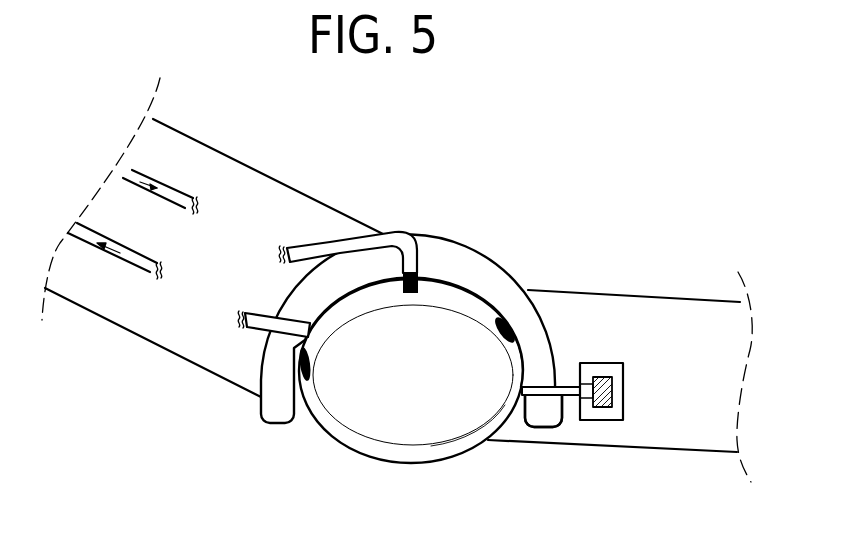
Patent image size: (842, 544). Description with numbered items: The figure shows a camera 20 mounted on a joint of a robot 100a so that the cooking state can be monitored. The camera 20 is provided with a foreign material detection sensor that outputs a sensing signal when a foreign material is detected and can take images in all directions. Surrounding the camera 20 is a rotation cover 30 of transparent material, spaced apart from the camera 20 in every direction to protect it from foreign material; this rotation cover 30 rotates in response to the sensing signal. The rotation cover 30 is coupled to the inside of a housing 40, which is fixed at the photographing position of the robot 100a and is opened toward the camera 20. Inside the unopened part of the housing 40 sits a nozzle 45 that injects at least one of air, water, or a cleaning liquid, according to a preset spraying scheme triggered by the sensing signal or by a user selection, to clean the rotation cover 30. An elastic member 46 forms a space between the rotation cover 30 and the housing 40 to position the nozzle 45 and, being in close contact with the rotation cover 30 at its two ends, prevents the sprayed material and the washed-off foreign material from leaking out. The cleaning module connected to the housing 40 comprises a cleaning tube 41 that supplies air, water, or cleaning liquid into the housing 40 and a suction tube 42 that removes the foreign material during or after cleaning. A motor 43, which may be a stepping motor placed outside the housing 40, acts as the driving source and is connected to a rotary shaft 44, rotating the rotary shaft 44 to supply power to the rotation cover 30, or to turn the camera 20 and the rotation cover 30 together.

The robot 100a is at (277, 181).
The cleaning tube 41 is at (173, 197).
The suction tube 42 is at (127, 266).
The rotation cover 30 is at (364, 457).
The camera 20 is at (450, 427).
The housing 40 is at (276, 418).
The nozzle 45 is at (419, 279).
The elastic member 46 is at (506, 322).
The rotary shaft 44 is at (547, 420).
The motor 43 is at (600, 410).